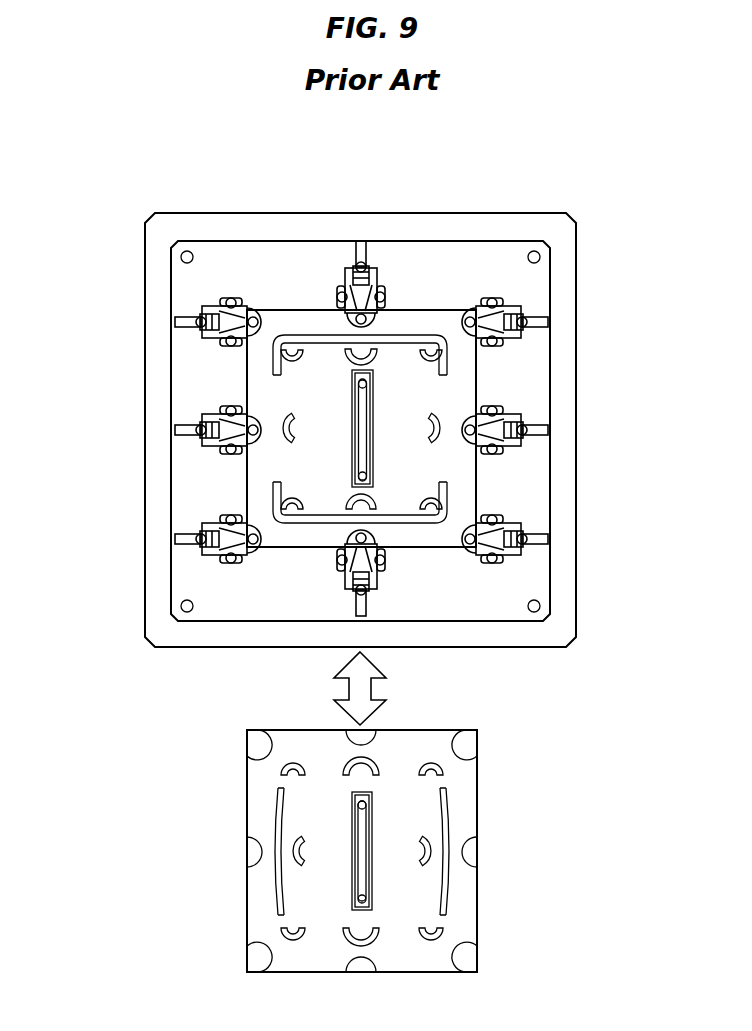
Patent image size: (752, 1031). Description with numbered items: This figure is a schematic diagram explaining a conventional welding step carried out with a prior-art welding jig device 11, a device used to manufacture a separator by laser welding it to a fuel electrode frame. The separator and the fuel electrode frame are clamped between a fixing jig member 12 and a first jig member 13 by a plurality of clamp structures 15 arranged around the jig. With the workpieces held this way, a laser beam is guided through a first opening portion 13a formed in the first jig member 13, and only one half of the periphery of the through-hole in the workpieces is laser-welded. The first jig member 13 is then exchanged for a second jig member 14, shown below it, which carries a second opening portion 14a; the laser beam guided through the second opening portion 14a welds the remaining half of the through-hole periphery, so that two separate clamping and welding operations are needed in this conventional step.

The welding jig device 11 is at (92, 222).
The fixing jig member 12 is at (522, 577).
The first jig member 13 is at (247, 482).
The first opening portion 13a is at (287, 417).
The second jig member 14 is at (247, 789).
The second opening portion 14a is at (420, 836).
The clamp structures 15 is at (497, 428).